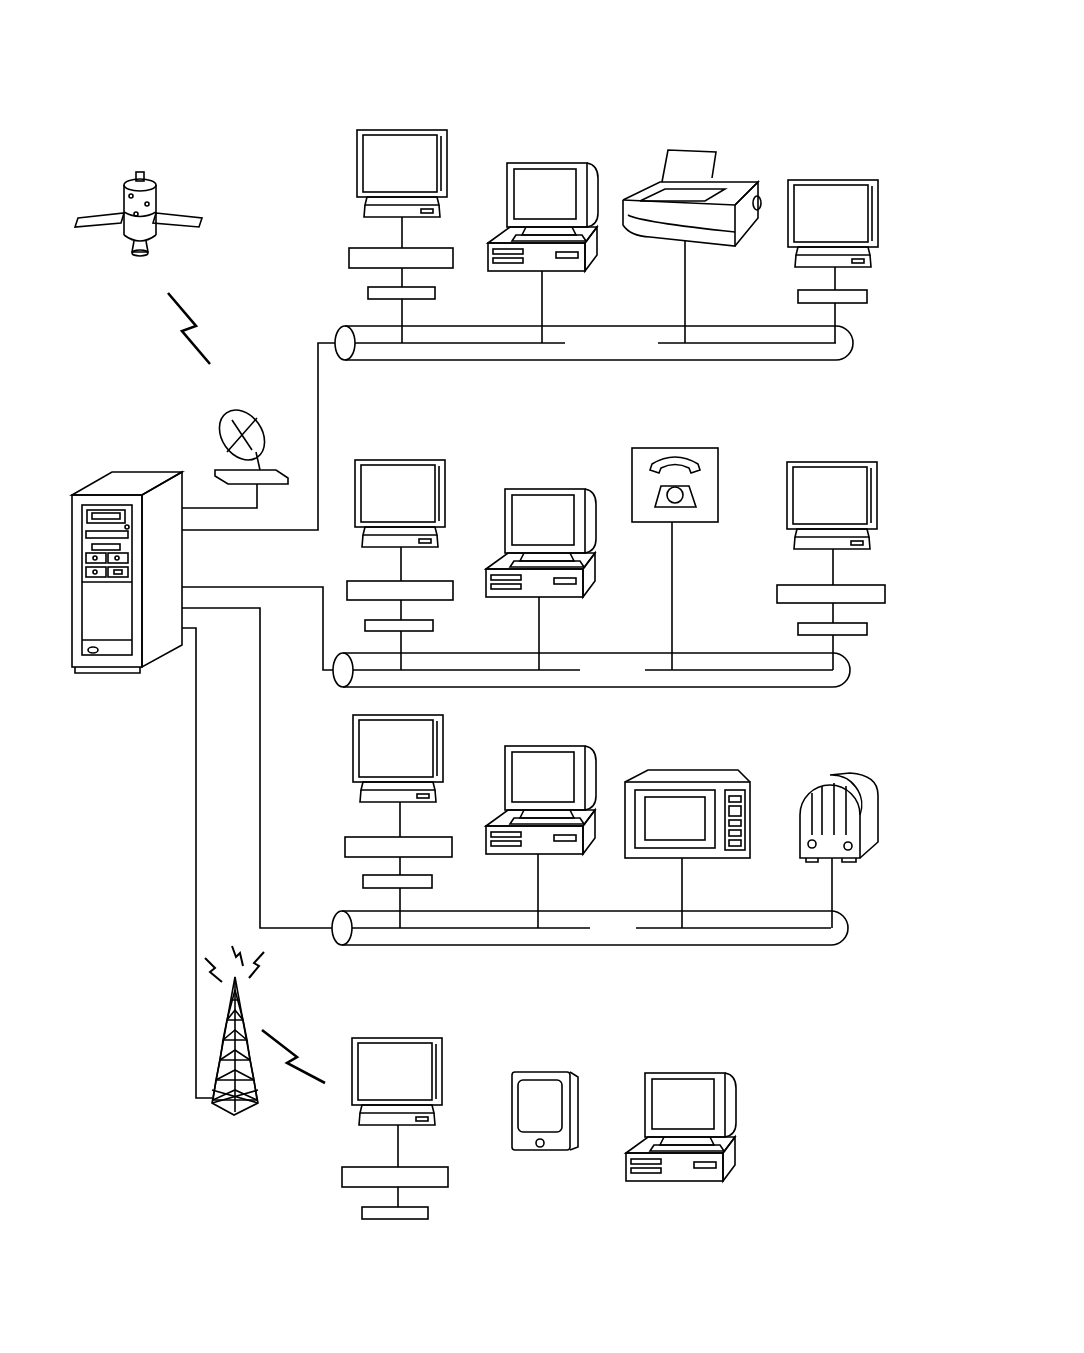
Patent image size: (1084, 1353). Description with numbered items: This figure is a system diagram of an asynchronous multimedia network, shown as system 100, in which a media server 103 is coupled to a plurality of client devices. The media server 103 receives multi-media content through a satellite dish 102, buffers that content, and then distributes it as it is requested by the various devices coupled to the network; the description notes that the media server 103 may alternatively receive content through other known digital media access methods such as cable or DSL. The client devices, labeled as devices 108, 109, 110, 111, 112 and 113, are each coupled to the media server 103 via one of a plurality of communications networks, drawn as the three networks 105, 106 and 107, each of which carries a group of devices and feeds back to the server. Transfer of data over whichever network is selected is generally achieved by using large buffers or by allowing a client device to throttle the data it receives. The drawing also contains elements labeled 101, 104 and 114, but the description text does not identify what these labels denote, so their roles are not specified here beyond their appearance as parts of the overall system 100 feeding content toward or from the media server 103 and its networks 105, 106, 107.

The system 100 is at (697, 43).
The satellite 101 is at (157, 205).
The satellite dish 102 is at (217, 440).
The media server 103 is at (120, 470).
The RF antenna 104 is at (242, 1010).
The communications network 105 is at (852, 353).
The communications network 106 is at (851, 680).
The communications network 107 is at (848, 935).
The device 108 is at (397, 128).
The device 109 is at (349, 248).
The device 110 is at (435, 293).
The device 111 is at (540, 163).
The device 112 is at (740, 183).
The device 113 is at (843, 180).
The client decoder 114 is at (867, 296).